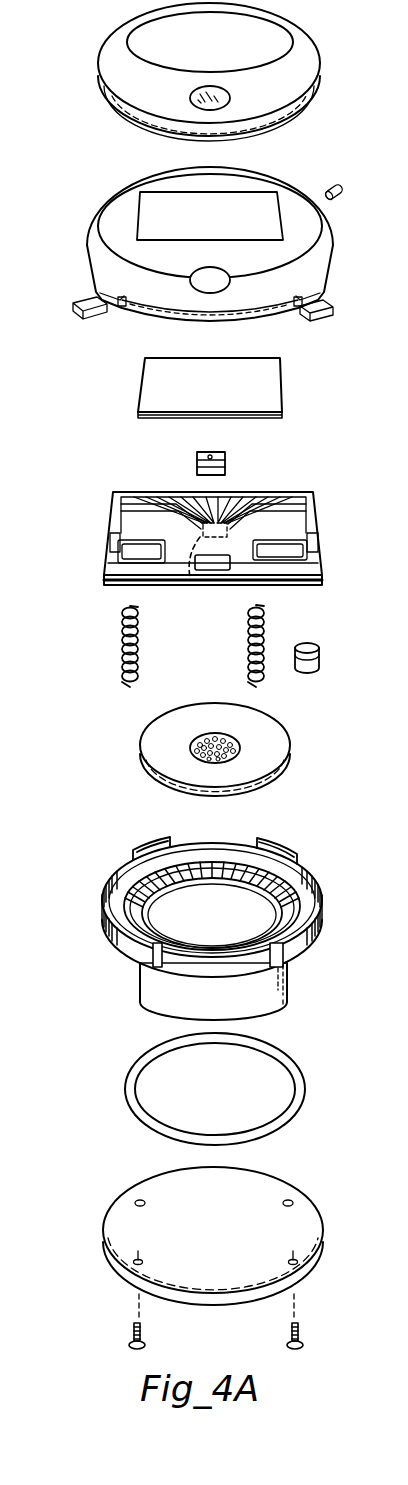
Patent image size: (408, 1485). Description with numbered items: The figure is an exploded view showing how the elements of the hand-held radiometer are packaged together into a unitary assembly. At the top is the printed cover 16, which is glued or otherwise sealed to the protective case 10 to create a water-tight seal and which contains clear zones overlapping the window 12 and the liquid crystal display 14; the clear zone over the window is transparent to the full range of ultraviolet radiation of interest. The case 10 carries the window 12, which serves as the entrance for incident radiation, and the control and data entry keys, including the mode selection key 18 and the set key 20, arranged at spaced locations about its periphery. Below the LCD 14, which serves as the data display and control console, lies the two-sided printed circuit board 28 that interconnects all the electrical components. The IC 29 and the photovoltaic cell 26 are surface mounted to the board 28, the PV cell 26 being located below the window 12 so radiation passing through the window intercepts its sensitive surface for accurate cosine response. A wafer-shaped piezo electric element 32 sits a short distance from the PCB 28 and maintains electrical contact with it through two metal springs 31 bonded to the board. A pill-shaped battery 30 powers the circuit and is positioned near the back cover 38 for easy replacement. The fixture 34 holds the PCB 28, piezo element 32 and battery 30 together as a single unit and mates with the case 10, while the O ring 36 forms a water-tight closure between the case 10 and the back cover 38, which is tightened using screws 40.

The protective case 10 is at (283, 173).
The window 12 is at (331, 198).
The liquid crystal display 14 is at (282, 390).
The printed cover 16 is at (307, 57).
The mode selection key 18 is at (88, 323).
The set key 20 is at (320, 322).
The photovoltaic cell 26 is at (227, 462).
The printed circuit board 28 is at (287, 492).
The IC 29 is at (190, 581).
The battery 30 is at (312, 645).
The metal springs 31 is at (248, 645).
The piezo electric element 32 is at (282, 722).
The fixture 34 is at (300, 850).
The O ring 36 is at (300, 1072).
The back cover 38 is at (322, 1184).
The screws 40 is at (141, 1332).